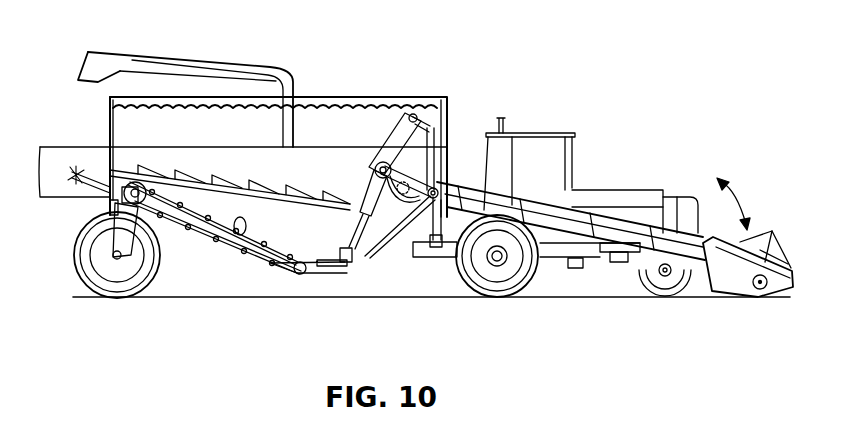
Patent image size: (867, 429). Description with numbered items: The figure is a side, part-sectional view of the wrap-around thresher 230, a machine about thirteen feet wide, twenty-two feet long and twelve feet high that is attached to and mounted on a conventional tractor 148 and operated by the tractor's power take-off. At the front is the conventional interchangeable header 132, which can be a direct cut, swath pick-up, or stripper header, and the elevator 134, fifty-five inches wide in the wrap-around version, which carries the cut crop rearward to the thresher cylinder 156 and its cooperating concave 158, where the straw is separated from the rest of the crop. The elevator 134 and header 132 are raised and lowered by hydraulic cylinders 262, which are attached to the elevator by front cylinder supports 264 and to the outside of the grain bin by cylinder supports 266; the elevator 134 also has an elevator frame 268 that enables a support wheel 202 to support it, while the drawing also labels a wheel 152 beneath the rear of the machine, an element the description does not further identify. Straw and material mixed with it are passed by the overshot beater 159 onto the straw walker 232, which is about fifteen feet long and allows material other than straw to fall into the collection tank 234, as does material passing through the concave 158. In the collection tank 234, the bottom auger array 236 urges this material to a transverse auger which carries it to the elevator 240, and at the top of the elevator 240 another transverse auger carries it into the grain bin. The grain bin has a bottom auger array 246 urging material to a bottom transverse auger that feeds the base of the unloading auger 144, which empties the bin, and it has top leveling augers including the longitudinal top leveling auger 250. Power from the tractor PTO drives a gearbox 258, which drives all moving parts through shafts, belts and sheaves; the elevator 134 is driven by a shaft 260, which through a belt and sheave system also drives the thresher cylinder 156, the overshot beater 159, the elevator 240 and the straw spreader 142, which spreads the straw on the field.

The interchangeable header 132 is at (766, 237).
The elevator 134 is at (697, 170).
The straw spreader 142 is at (73, 177).
The unloading auger 144 is at (169, 81).
The tractor 148 is at (590, 190).
The rear wheel 152 is at (82, 267).
The thresher cylinder 156 is at (442, 186).
The concave 158 is at (390, 258).
The overshot beater 159 is at (380, 164).
The support wheel 202 is at (550, 283).
The wrap-around thresher 230 is at (610, 346).
The straw walker 232 is at (228, 178).
The collection tank 234 is at (322, 238).
The bottom auger array 236 is at (240, 244).
The elevator 240 is at (367, 267).
The bottom auger array 246 is at (187, 237).
The longitudinal top leveling auger 250 is at (386, 110).
The gearbox 258 is at (436, 278).
The shaft 260 is at (452, 188).
The hydraulic cylinders 262 is at (577, 268).
The front cylinder supports 264 is at (647, 288).
The cylinder supports 266 is at (405, 256).
The elevator frame 268 is at (617, 262).